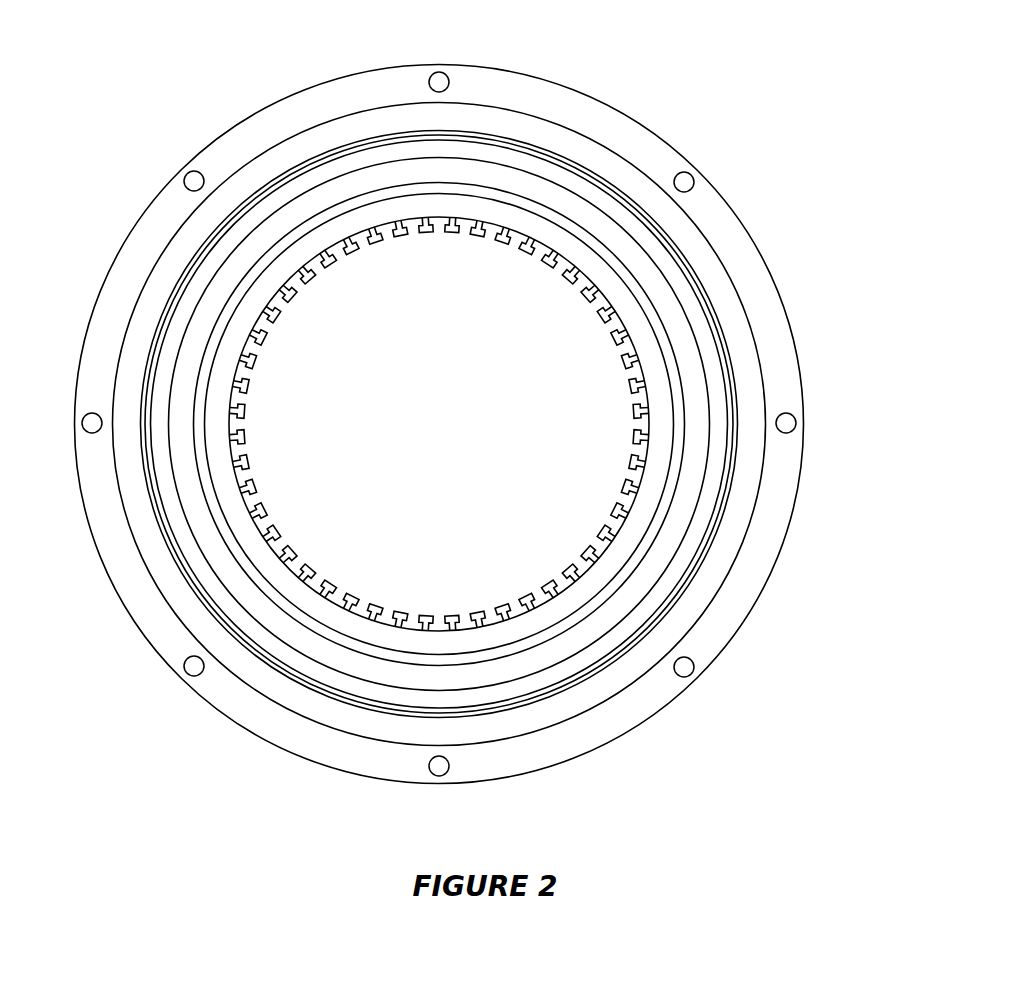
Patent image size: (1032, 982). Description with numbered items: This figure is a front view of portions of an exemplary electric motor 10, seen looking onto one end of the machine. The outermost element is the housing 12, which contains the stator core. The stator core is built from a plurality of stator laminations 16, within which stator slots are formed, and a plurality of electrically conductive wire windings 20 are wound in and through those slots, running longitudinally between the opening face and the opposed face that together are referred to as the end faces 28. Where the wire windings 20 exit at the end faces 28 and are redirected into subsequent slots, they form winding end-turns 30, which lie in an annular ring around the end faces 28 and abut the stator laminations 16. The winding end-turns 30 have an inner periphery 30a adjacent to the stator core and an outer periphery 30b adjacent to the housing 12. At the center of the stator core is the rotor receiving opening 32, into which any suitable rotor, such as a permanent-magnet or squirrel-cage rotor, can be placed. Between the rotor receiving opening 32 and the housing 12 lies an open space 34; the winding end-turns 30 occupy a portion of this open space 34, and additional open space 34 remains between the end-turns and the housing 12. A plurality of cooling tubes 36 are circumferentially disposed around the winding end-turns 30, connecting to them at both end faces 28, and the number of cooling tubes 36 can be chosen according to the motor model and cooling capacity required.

The electric motor 10 is at (160, 137).
The housing 12 is at (567, 108).
The open space 34 is at (580, 155).
The cooling tubes 36 is at (622, 208).
The winding end-turns 30 is at (613, 239).
The inner periphery 30a is at (408, 639).
The outer periphery 30b is at (390, 697).
The wire windings 20 is at (605, 275).
The stator laminations 16 is at (603, 308).
The end faces 28 is at (545, 398).
The rotor receiving opening 32 is at (437, 423).